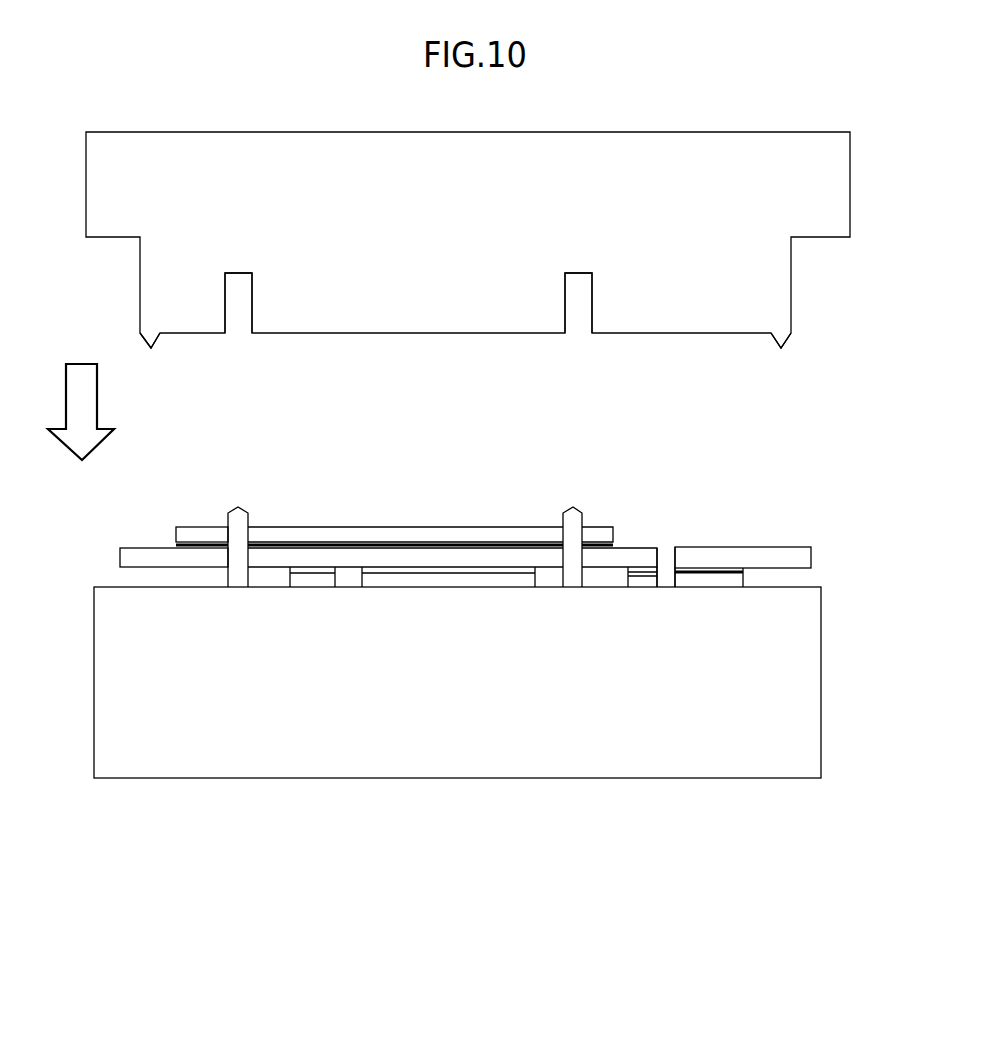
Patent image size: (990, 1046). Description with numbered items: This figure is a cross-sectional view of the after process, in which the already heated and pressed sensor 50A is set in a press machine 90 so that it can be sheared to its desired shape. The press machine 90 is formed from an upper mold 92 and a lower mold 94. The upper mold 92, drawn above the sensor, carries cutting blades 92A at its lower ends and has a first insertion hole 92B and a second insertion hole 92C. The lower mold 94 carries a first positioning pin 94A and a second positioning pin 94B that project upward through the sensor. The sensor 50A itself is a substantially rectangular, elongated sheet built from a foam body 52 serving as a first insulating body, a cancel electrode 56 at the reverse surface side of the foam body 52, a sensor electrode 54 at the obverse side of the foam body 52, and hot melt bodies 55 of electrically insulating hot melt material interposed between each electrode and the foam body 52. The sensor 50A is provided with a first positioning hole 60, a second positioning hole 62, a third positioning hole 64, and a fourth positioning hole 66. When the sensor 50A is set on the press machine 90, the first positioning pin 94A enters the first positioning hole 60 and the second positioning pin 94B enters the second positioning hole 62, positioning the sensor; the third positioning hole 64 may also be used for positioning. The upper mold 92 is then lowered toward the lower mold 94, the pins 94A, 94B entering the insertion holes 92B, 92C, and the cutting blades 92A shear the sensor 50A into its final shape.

The press machine 90 is at (532, 455).
The upper mold 92 is at (842, 180).
The cutting blades 92A is at (156, 339).
The first insertion hole 92B is at (590, 312).
The second insertion hole 92C is at (250, 312).
The lower mold 94 is at (813, 695).
The first positioning pin 94A is at (573, 506).
The second positioning pin 94B is at (242, 507).
The sensor 50A is at (469, 510).
The foam body 52 is at (127, 558).
The sensor electrode 54 is at (740, 580).
The hot melt bodies 55 is at (193, 545).
The cancel electrode 56 is at (208, 532).
The first positioning hole 60 is at (570, 550).
The second positioning hole 62 is at (238, 548).
The third positioning hole 64 is at (672, 560).
The fourth positioning hole 66 is at (356, 575).